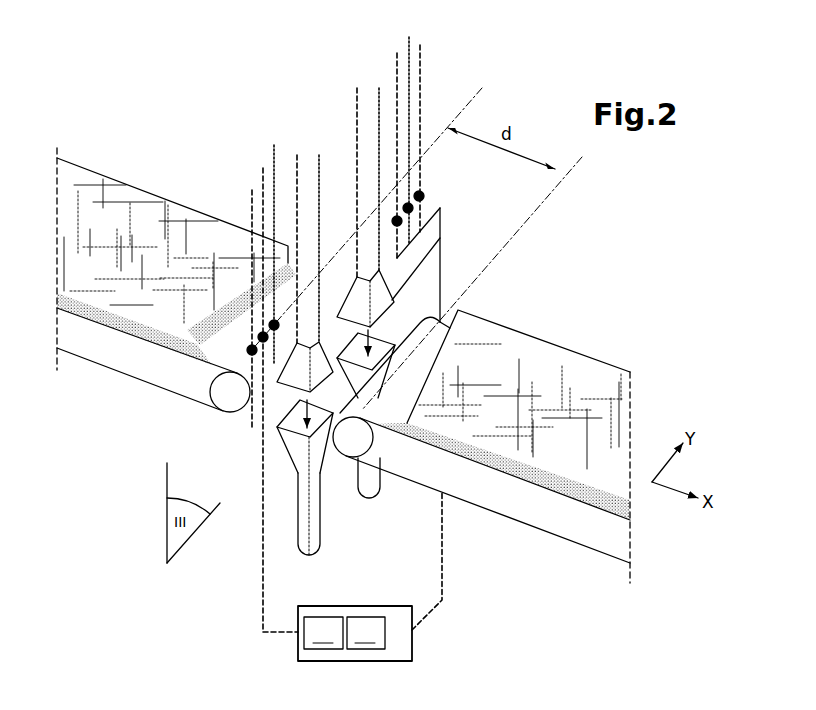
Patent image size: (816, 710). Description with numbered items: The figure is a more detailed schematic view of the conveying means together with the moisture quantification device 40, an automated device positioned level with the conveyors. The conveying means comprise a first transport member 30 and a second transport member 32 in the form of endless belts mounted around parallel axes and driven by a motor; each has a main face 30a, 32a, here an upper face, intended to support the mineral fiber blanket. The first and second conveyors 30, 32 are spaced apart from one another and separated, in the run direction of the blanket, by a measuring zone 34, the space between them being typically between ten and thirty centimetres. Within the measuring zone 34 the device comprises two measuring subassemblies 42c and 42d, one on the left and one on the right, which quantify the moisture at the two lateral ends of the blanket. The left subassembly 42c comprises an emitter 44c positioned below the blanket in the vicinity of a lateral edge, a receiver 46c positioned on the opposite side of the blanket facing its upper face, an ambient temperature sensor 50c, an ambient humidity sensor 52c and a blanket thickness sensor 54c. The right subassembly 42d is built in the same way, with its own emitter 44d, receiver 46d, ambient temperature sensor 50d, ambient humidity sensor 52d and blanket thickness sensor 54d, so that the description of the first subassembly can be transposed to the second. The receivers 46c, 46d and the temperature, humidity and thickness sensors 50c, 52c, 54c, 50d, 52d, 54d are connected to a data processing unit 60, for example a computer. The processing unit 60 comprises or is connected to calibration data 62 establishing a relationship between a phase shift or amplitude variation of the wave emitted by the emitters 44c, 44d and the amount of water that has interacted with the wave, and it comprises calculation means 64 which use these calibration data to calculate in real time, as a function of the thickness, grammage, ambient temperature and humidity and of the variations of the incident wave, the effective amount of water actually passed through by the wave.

The first transport member 30 is at (115, 357).
The main face of first transport member 30a is at (232, 330).
The second transport member 32 is at (547, 510).
The main face of second transport member 32a is at (391, 412).
The measuring zone 34 is at (248, 423).
The moisture quantification device 40 is at (463, 250).
The first measuring subassembly 42c is at (240, 455).
The second measuring subassembly 42d is at (417, 298).
The emitter 44c is at (312, 537).
The emitter 44d is at (372, 485).
The receiver 46c is at (303, 197).
The receiver 46d is at (368, 160).
The ambient temperature sensor 50c is at (253, 201).
The ambient humidity sensor 52c is at (262, 181).
The blanket thickness sensor 54c is at (275, 150).
The ambient temperature sensor 50d is at (397, 72).
The ambient humidity sensor 52d is at (409, 42).
The blanket thickness sensor 54d is at (420, 72).
The data processing unit 60 is at (388, 584).
The calibration data 62 is at (366, 633).
The calculation means 64 is at (323, 633).